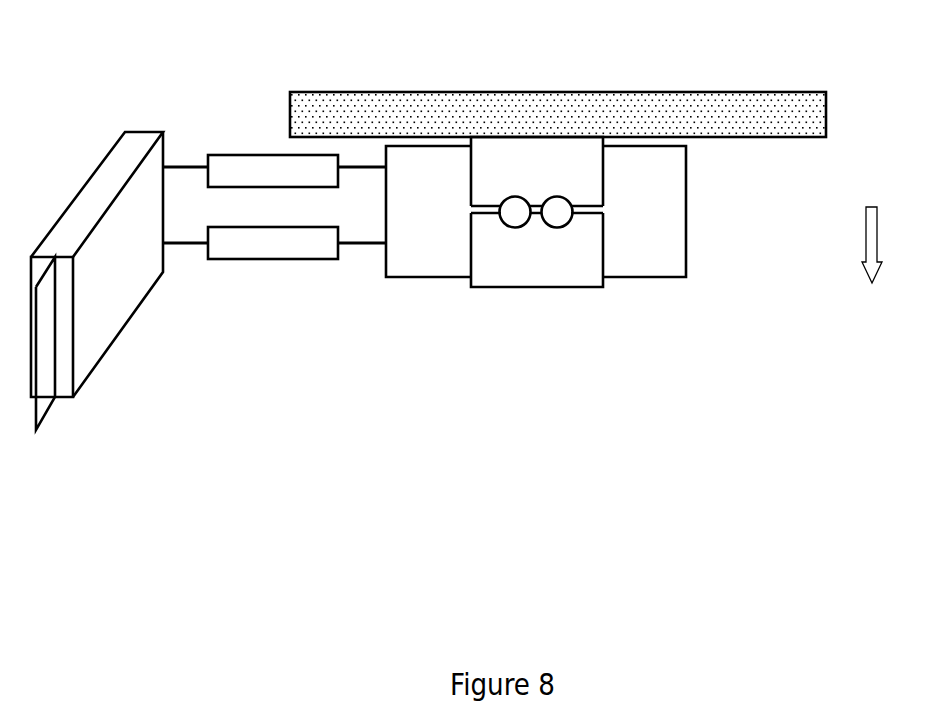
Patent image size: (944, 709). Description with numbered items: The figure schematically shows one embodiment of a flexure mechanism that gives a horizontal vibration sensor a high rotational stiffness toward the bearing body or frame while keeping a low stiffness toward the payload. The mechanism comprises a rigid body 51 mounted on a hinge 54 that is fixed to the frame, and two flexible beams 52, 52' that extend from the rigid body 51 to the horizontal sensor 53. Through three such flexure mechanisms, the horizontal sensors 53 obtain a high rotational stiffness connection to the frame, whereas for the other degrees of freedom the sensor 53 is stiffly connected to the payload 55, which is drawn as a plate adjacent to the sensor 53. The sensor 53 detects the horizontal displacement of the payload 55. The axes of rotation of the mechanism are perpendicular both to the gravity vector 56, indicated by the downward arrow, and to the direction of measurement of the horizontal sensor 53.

The rigid body 51 is at (79, 178).
The flexible beam 52 is at (273, 282).
The flexible beam 52' is at (273, 130).
The horizontal sensor 53 is at (688, 282).
The hinge 54 is at (41, 433).
The payload 55 is at (708, 79).
The gravity vector 56 is at (855, 245).